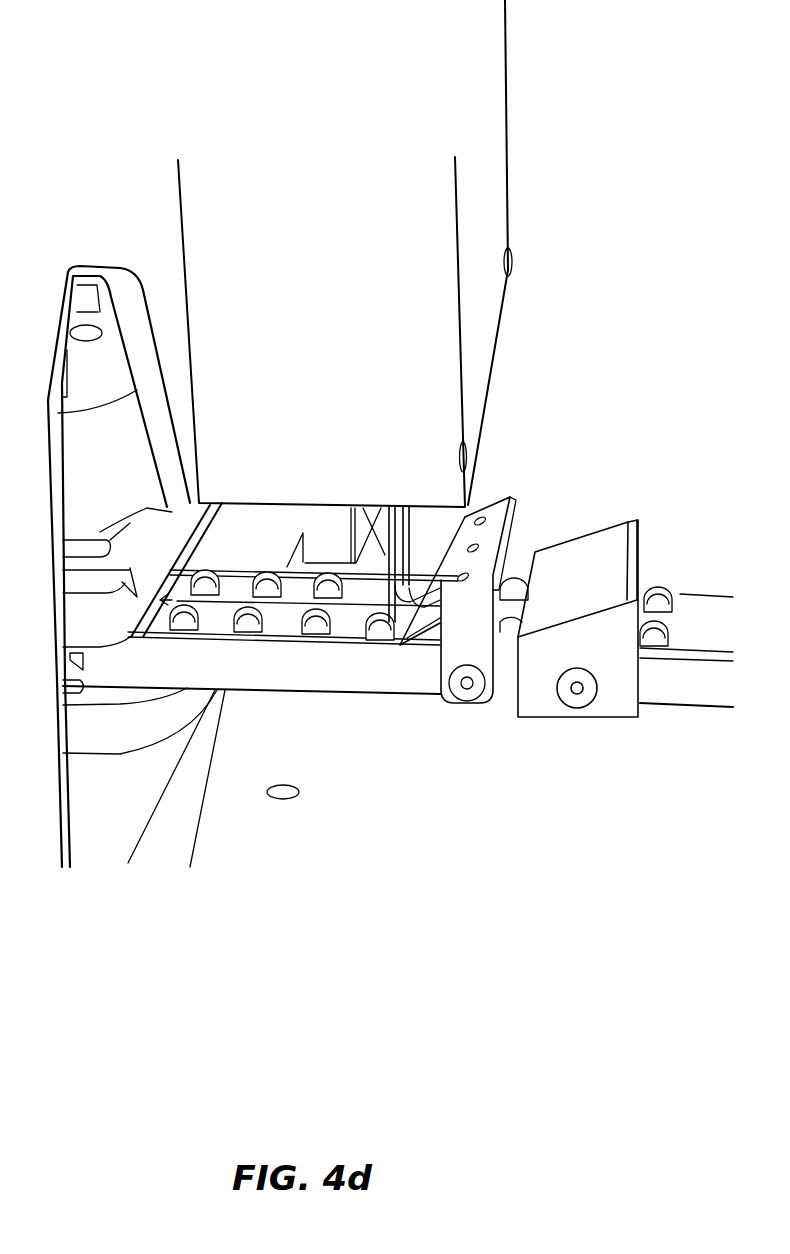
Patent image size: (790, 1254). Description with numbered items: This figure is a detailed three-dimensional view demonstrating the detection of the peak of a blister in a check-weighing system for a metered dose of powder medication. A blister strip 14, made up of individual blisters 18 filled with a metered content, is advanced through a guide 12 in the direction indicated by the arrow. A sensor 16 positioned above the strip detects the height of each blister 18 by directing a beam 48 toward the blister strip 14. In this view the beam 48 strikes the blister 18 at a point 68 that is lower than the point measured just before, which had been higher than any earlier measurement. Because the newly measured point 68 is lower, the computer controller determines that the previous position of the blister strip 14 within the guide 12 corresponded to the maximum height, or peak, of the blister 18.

The guide 12 is at (328, 675).
The blister strip 14 is at (270, 627).
The sensor 16 is at (393, 423).
The blister 18 is at (357, 647).
The beam 48 is at (358, 502).
The point 68 is at (393, 647).